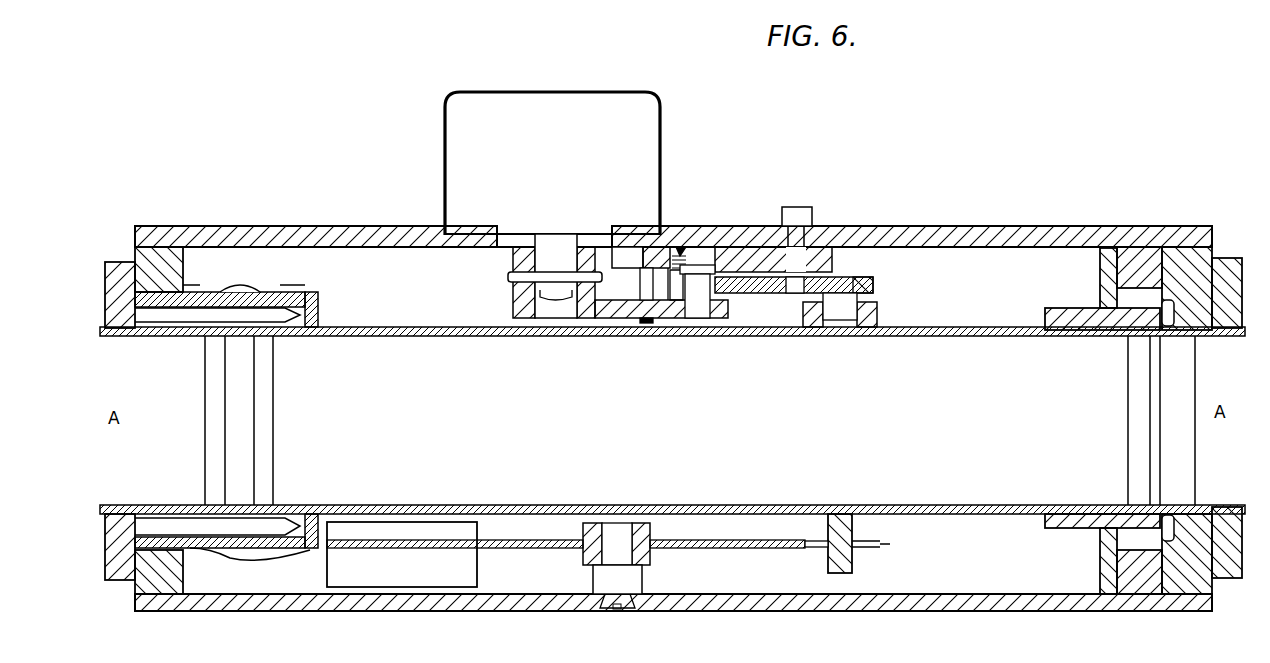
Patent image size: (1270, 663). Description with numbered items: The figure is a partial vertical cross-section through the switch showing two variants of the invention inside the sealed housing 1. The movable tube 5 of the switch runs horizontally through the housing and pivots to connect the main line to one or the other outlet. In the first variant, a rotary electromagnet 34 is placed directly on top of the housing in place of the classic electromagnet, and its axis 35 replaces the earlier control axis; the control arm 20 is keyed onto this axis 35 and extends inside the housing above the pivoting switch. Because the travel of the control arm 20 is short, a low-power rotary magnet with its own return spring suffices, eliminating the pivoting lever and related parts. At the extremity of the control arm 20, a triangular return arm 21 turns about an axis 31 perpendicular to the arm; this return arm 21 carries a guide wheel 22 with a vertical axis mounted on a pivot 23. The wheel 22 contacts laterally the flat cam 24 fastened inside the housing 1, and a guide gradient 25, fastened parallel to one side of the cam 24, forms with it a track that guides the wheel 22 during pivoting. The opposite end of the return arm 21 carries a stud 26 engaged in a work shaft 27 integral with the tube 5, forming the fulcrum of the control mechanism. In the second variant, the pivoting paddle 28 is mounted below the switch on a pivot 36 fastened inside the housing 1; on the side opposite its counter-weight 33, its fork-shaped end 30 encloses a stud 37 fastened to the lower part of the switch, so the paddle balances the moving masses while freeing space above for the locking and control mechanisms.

The sealed housing 1 is at (487, 603).
The movable tube 5 is at (547, 512).
The control arm 20 is at (597, 318).
The return arm 21 is at (832, 281).
The guide wheel 22 is at (678, 238).
The pivot 23 is at (686, 247).
The flat cam 24 is at (752, 236).
The guide gradient 25 is at (652, 237).
The stud 26 is at (862, 283).
The work shaft 27 is at (805, 329).
The pivoting paddle 28 is at (532, 548).
The fork-shaped end 30 is at (890, 547).
The axis 31 is at (672, 300).
The counter-weight 33 is at (373, 578).
The rotary electromagnet 34 is at (500, 108).
The axis 35 is at (545, 237).
The pivot 36 is at (633, 580).
The stud 37 is at (856, 569).